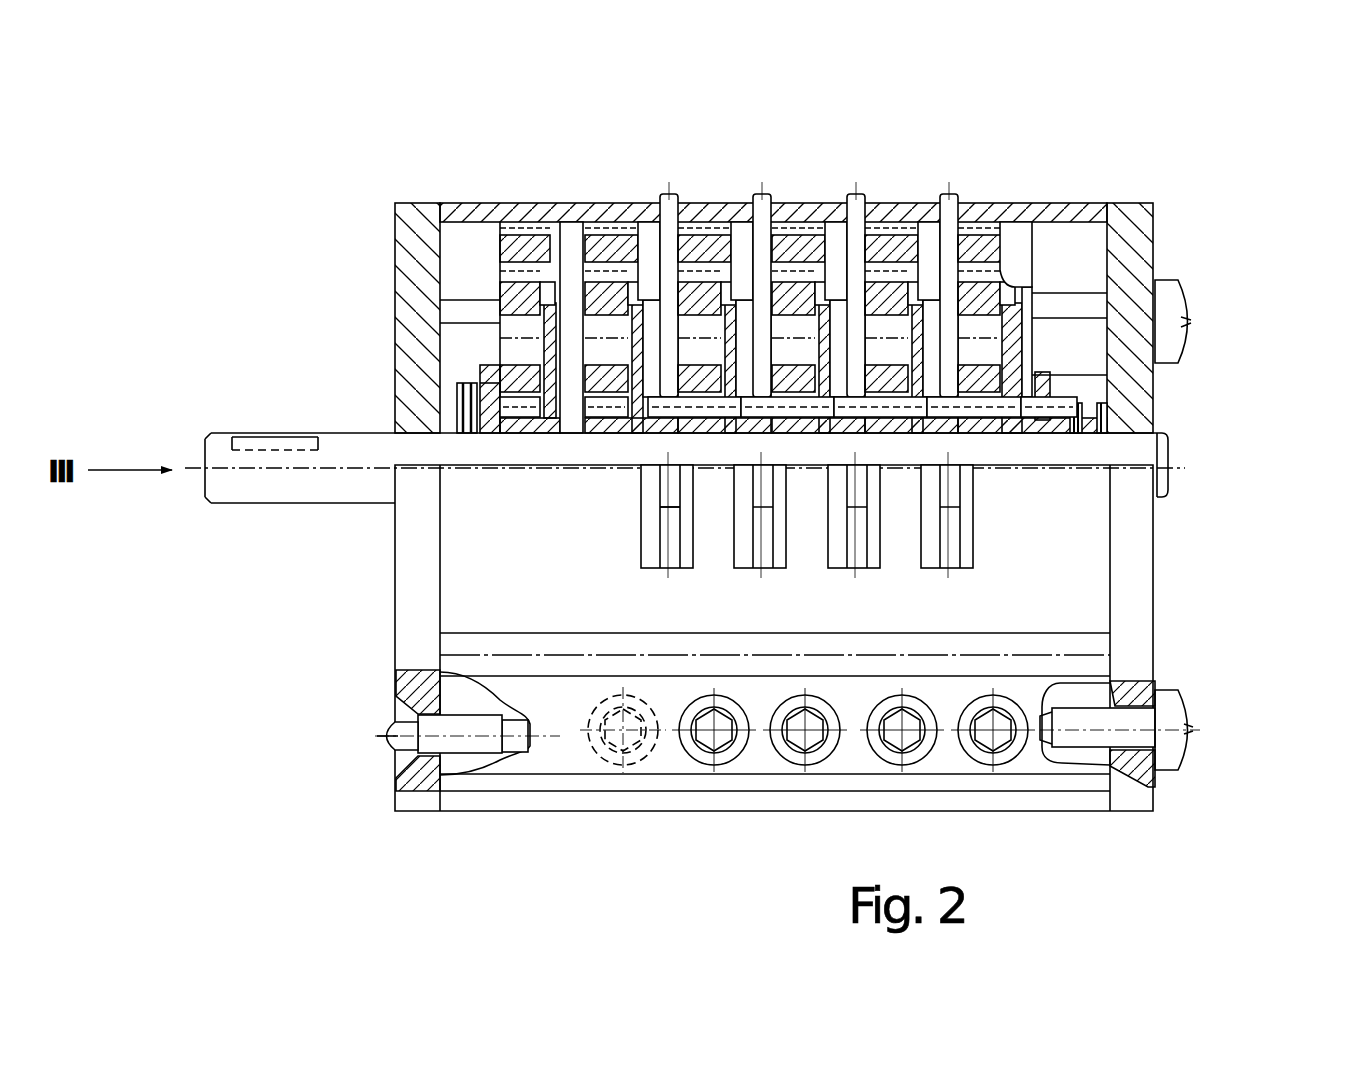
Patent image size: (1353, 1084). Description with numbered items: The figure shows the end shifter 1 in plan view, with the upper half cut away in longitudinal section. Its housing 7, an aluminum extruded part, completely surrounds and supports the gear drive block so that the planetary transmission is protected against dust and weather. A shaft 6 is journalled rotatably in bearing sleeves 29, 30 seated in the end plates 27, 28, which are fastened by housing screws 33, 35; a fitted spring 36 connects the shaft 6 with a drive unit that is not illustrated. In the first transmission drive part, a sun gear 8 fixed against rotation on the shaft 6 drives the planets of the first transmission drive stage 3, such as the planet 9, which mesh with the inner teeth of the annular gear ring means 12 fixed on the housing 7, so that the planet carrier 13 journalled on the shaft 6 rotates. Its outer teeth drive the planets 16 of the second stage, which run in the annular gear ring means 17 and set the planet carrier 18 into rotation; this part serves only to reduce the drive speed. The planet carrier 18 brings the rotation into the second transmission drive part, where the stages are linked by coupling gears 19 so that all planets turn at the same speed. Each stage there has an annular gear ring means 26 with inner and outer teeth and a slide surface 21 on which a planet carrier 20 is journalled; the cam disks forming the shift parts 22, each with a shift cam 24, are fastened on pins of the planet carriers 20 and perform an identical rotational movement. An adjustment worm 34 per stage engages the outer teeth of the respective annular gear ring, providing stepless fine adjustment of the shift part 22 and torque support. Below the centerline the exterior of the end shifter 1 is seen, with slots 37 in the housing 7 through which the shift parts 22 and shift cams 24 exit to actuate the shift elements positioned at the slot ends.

The end shifter 1 is at (328, 630).
The first transmission drive stage 3 is at (494, 271).
The shaft 6 is at (352, 447).
The housing 7 is at (495, 204).
The sun gear 8 is at (487, 433).
The planet 9 is at (507, 297).
The annular gear ring means 12 is at (590, 205).
The planet carrier 13 is at (598, 385).
The planets 16 is at (612, 395).
The annular gear ring means 17 is at (648, 204).
The planet carrier 18 is at (655, 433).
The coupling gear 19 is at (757, 428).
The planet carrier 20 is at (760, 367).
The slide surface 21 is at (880, 248).
The shift part 22 is at (725, 237).
The shift cam 24 is at (676, 203).
The annular gear ring means 26 is at (785, 227).
The end plate 27 is at (395, 298).
The end plate 28 is at (1131, 262).
The bearing sleeve 29 is at (392, 440).
The bearing sleeve 30 is at (1160, 418).
The housing screw 33 is at (1172, 718).
The adjustment worm 34 is at (598, 758).
The housing screw 35 is at (400, 720).
The fitted spring 36 is at (250, 438).
The slot 37 is at (665, 507).